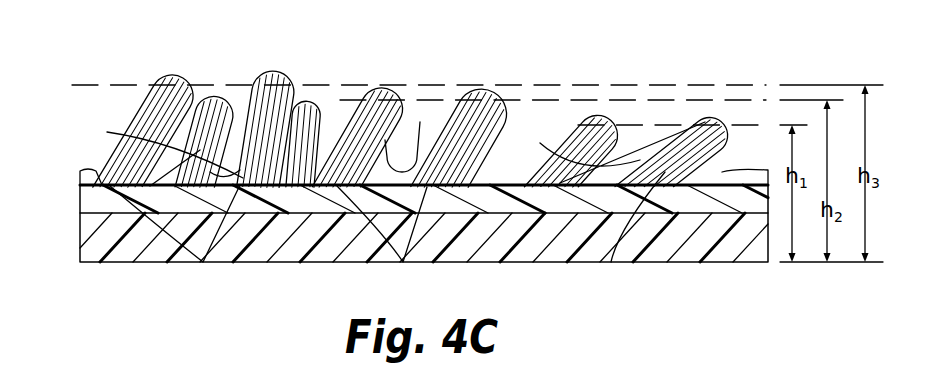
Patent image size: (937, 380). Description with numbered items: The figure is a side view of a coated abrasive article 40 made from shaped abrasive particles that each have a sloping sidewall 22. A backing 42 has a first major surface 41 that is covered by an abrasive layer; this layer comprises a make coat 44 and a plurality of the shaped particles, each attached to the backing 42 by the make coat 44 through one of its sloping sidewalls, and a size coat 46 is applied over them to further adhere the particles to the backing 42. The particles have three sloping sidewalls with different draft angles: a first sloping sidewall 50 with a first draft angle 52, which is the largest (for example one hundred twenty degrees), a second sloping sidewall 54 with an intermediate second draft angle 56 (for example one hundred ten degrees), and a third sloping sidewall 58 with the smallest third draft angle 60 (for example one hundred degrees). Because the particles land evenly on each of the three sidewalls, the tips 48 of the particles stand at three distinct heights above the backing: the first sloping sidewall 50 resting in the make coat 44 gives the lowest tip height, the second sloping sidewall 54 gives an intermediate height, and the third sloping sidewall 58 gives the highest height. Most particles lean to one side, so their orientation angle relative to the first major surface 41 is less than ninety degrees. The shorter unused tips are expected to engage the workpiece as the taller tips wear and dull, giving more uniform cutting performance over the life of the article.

The coated abrasive article 40 is at (133, 50).
The tips 48 is at (160, 83).
The sloping sidewall 22 is at (228, 150).
The size coat 46 is at (158, 99).
The third draft angle 60 is at (155, 148).
The second draft angle 56 is at (462, 148).
The first draft angle 52 is at (590, 172).
The make coat 44 is at (97, 203).
The backing 42 is at (110, 242).
The first major surface 41 is at (150, 240).
The third sloping sidewall 58 is at (203, 262).
The second sloping sidewall 54 is at (403, 262).
The first sloping sidewall 50 is at (611, 262).